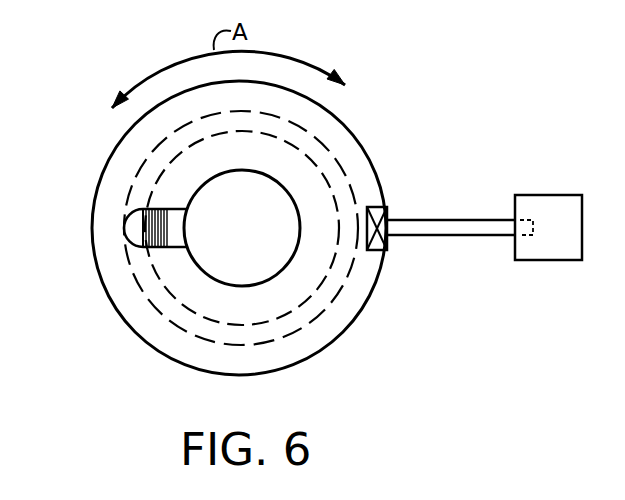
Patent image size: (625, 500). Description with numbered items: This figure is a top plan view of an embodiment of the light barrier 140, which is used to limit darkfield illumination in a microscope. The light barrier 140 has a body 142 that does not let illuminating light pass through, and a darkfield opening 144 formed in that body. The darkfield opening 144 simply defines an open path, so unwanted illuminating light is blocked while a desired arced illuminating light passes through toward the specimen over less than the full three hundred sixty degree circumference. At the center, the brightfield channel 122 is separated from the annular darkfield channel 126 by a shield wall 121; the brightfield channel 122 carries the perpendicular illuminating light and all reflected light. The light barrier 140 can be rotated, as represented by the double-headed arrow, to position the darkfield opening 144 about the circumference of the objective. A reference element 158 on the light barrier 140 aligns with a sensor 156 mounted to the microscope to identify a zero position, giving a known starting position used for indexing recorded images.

The light barrier 140 is at (146, 58).
The body 142 is at (345, 148).
The brightfield channel 122 is at (258, 258).
The shield wall 121 is at (175, 228).
The darkfield channel 126 is at (132, 227).
The darkfield opening 144 is at (160, 244).
The reference element 158 is at (470, 230).
The sensor 156 is at (545, 258).